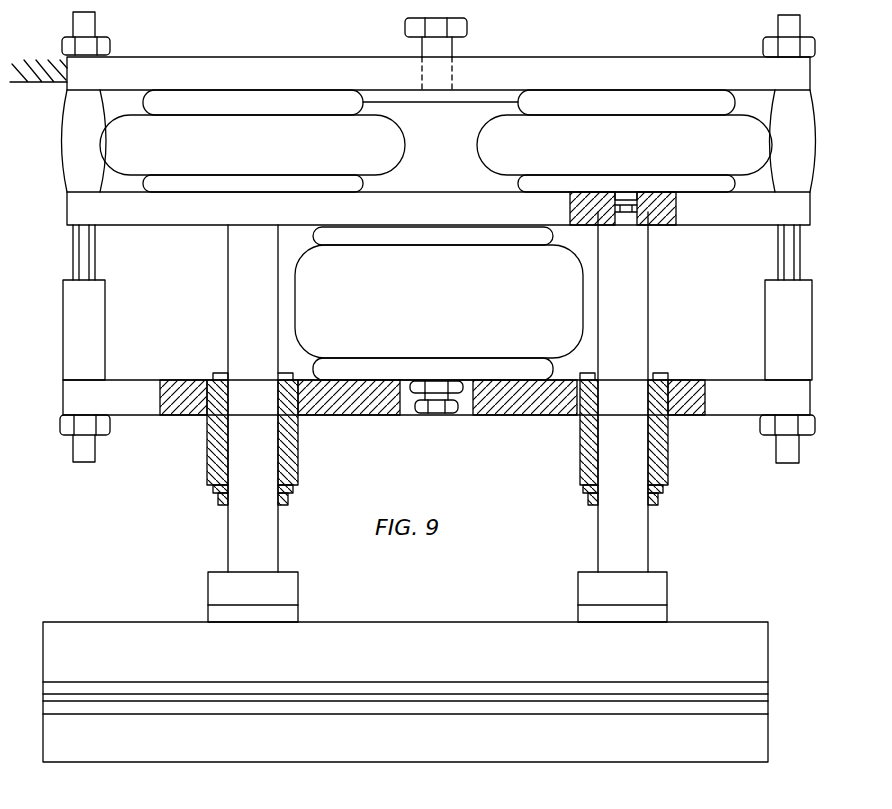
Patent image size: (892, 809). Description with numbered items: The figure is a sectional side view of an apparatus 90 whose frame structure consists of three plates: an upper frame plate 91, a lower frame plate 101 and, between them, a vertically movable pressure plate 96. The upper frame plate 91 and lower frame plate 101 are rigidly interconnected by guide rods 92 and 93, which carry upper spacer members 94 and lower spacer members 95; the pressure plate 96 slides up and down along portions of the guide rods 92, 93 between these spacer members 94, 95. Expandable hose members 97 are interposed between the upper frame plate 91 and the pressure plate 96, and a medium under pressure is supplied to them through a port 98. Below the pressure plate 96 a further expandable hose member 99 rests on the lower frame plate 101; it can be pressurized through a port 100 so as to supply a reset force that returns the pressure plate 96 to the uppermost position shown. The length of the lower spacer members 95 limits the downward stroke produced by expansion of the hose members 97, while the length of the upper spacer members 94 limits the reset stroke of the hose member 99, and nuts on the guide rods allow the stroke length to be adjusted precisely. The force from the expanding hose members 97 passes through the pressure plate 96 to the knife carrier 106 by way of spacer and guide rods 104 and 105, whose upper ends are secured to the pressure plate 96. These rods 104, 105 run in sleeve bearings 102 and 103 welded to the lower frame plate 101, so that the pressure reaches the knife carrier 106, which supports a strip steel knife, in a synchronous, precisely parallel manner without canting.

The apparatus 90 is at (580, 50).
The upper frame plate 91 is at (294, 66).
The guide rod 92 is at (78, 26).
The guide rod 93 is at (795, 26).
The upper spacer member 94 is at (68, 146).
The lower spacer member 95 is at (72, 318).
The pressure plate 96 is at (800, 214).
The expandable hose member 97 is at (436, 141).
The port 98 is at (465, 26).
The expandable hose member 99 is at (439, 303).
The port 100 is at (436, 418).
The lower frame plate 101 is at (132, 392).
The sleeve bearing 102 is at (298, 450).
The sleeve bearing 103 is at (580, 455).
The spacer and guide rod 104 is at (275, 535).
The spacer and guide rod 105 is at (600, 538).
The knife carrier 106 is at (760, 646).